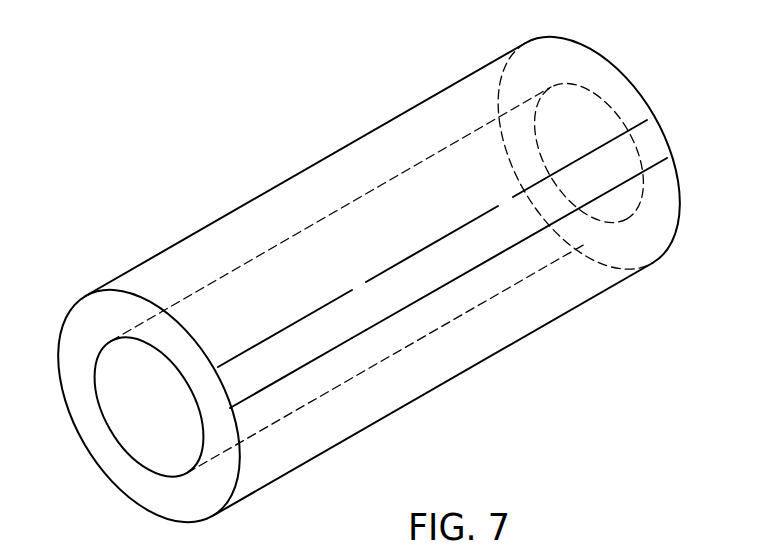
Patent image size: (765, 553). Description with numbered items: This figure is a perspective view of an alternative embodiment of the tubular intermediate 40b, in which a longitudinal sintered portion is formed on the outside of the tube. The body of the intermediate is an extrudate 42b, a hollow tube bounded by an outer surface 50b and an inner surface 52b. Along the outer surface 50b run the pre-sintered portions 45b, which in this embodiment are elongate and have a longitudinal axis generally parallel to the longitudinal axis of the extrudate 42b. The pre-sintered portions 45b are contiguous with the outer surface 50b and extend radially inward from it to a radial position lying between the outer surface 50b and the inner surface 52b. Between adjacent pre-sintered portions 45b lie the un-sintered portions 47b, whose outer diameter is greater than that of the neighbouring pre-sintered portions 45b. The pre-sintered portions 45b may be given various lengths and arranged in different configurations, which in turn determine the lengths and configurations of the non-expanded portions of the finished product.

The tubular intermediate 40b is at (350, 278).
The extrudate 42b is at (587, 46).
The pre-sintered portions 45b is at (287, 329).
The un-sintered portions 47b is at (363, 286).
The outer surface 50b is at (413, 120).
The inner surface 52b is at (153, 453).